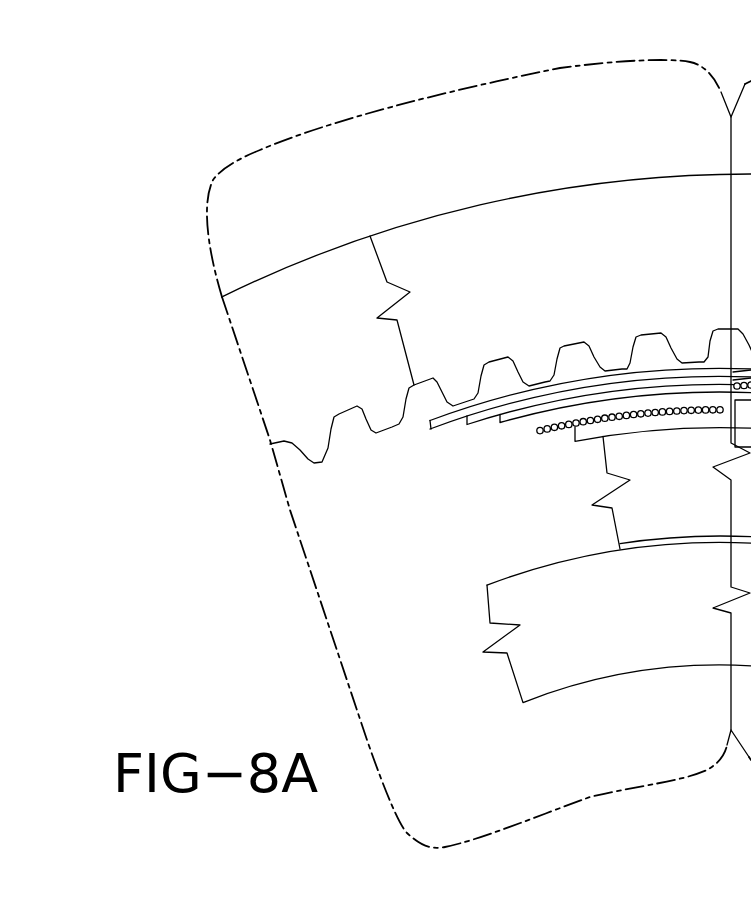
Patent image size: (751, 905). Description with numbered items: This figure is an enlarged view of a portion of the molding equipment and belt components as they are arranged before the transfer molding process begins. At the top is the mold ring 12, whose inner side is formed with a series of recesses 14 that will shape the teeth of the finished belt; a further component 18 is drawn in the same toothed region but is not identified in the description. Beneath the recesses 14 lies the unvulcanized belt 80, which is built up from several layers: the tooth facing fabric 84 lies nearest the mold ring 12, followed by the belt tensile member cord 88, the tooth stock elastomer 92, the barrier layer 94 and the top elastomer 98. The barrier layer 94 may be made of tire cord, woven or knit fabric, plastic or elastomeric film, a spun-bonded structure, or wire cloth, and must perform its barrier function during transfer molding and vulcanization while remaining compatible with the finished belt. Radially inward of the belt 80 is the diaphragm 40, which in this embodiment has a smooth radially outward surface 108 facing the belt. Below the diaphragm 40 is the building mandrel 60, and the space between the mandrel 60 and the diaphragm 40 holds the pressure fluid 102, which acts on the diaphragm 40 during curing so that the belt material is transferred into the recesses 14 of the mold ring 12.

The mold ring 12 is at (510, 186).
The recesses 14 is at (508, 376).
The gear 18 is at (510, 378).
The diaphragm 40 is at (580, 621).
The building mandrel 60 is at (505, 606).
The unvulcanized belt 80 is at (558, 420).
The tooth facing fabric 84 is at (444, 433).
The belt tensile member cord 88 is at (481, 424).
The tooth stock elastomer 92 is at (513, 427).
The barrier layer 94 is at (553, 438).
The top elastomer 98 is at (663, 426).
The pressure fluid 102 is at (693, 543).
The radially outward surface 108 is at (690, 428).